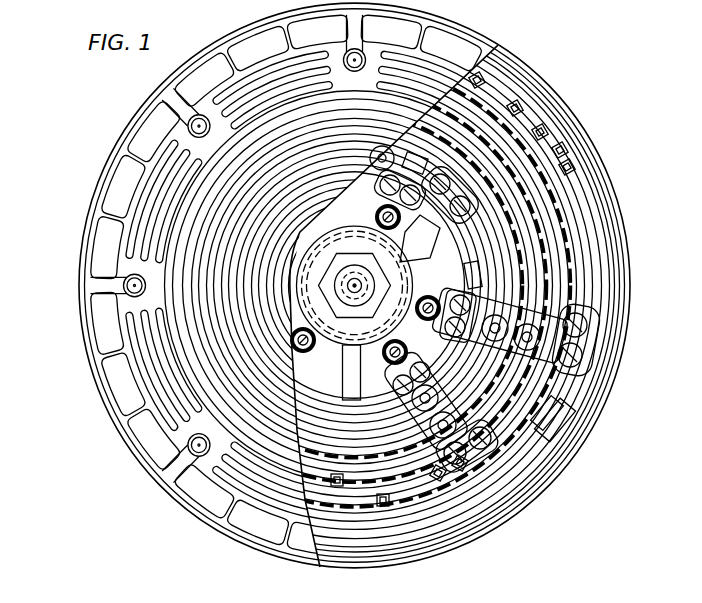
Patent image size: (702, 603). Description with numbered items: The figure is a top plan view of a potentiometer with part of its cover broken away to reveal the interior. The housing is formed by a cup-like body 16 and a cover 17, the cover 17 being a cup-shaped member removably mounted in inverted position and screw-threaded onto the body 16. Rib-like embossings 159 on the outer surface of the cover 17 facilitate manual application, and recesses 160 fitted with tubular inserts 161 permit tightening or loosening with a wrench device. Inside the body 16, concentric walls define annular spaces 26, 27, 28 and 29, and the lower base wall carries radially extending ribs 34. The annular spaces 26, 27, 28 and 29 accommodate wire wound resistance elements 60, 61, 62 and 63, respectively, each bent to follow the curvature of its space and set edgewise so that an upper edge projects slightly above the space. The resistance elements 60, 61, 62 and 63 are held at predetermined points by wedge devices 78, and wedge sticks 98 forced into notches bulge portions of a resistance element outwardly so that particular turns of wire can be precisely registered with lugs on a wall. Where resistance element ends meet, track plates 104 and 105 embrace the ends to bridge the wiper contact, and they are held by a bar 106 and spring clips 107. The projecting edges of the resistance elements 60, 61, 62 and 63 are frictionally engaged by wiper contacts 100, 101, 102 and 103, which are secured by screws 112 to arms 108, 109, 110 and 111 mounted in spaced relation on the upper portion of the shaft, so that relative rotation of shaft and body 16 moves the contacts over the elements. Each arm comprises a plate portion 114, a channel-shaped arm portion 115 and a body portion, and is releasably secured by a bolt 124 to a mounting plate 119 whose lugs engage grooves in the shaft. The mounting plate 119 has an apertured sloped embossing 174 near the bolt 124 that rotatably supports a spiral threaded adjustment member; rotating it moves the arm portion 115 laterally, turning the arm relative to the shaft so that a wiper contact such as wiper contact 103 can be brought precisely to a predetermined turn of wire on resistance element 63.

The body 16 is at (619, 312).
The cover 17 is at (132, 457).
The annular space 26 is at (590, 167).
The annular space 27 is at (583, 233).
The annular space 28 is at (553, 233).
The annular space 29 is at (470, 283).
The ribs 34 is at (350, 372).
The resistance element 60 is at (570, 200).
The resistance element 61 is at (523, 240).
The resistance element 62 is at (533, 287).
The resistance element 63 is at (587, 297).
The wedge device 78 is at (570, 162).
The wedge stick 98 is at (471, 133).
The wiper contact 100 is at (527, 440).
The wiper contact 101 is at (383, 506).
The wiper contact 102 is at (337, 486).
The wiper contact 103 is at (470, 273).
The track plate 104 is at (483, 86).
The track plate 105 is at (562, 145).
The bar 106 is at (543, 128).
The spring clips 107 is at (519, 108).
The arm 108 is at (557, 377).
The arm 109 is at (440, 478).
The arm 110 is at (303, 377).
The arm 111 is at (398, 248).
The screws 112 is at (587, 332).
The plate portion 114 is at (590, 357).
The arm portion 115 is at (448, 340).
The mounting plate 119 is at (405, 232).
The bolt 124 is at (378, 210).
The rib-like embossings 159 is at (160, 477).
The recesses 160 is at (123, 292).
The tubular inserts 161 is at (130, 278).
The sloped embossing 174 is at (372, 170).